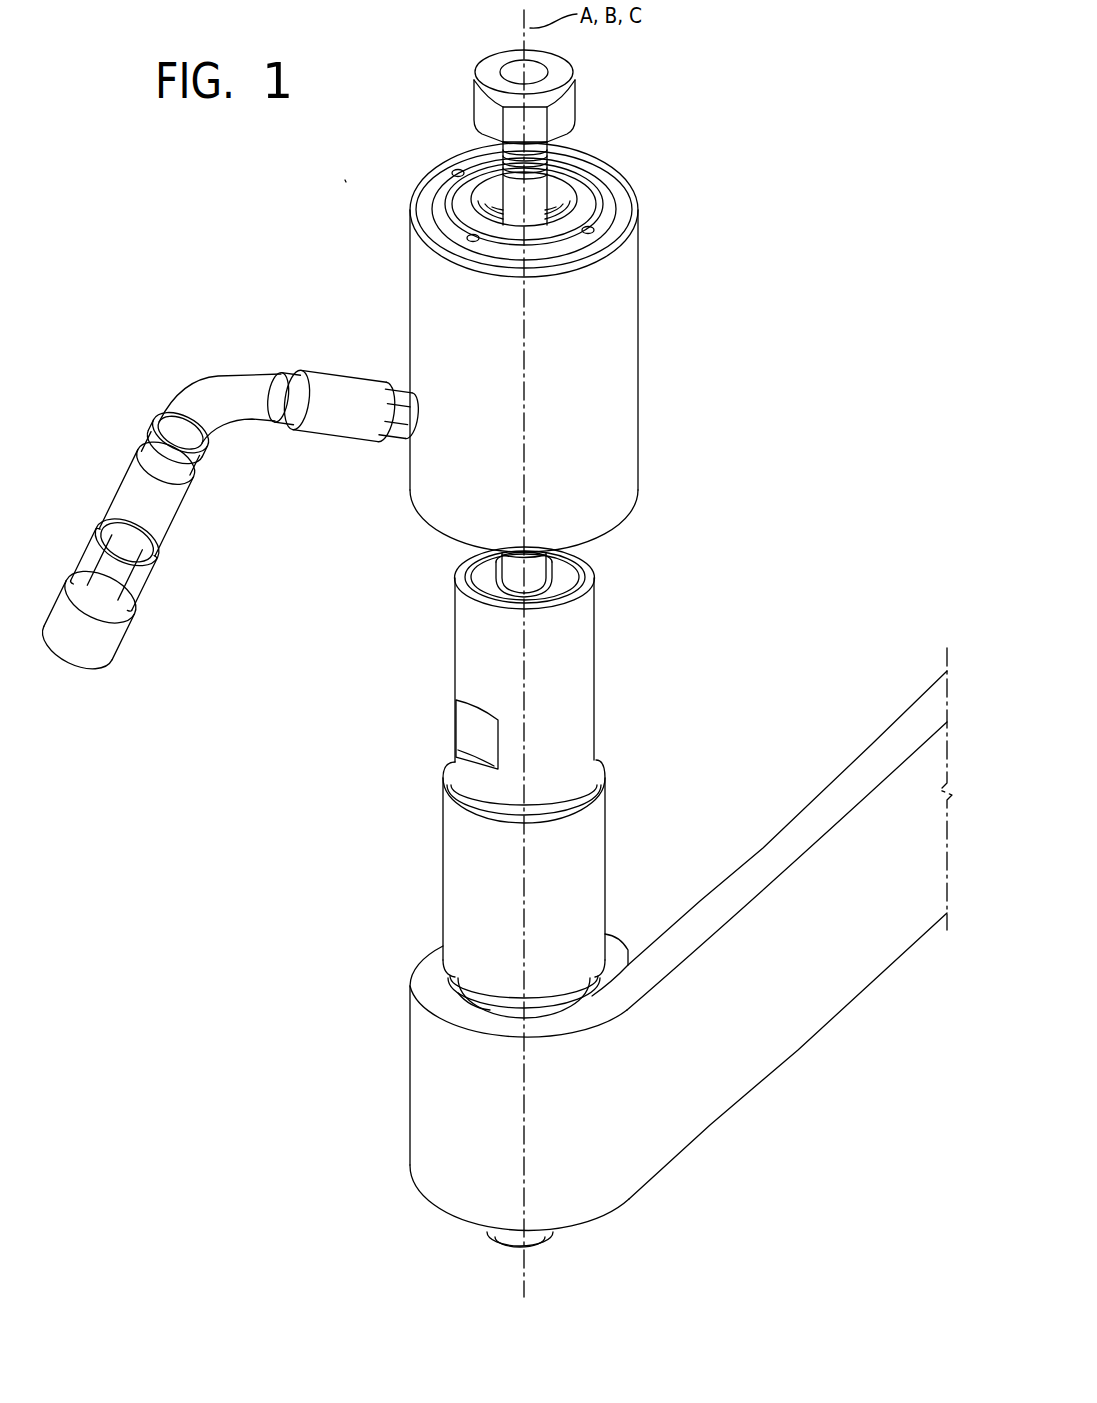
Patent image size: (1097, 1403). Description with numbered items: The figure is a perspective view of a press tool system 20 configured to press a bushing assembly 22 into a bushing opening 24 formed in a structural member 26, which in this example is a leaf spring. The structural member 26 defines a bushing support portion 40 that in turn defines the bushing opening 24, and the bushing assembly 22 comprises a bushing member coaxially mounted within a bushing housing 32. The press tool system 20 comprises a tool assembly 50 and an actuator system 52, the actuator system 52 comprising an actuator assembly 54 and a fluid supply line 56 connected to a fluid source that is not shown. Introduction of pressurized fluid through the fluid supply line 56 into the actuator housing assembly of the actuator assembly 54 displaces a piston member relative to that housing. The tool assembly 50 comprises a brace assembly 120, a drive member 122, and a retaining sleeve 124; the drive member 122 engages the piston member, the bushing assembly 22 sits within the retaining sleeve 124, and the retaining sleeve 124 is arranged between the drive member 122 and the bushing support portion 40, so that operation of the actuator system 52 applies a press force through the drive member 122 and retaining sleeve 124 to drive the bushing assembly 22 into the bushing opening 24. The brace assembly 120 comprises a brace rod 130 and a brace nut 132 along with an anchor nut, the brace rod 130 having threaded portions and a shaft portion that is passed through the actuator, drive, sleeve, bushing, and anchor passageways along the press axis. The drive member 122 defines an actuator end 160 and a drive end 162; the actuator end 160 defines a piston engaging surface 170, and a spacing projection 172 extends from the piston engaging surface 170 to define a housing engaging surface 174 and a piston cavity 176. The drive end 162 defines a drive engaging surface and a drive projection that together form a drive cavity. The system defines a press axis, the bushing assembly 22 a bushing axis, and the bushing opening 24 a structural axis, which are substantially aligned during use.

The press tool system 20 is at (345, 180).
The bushing assembly 22 is at (438, 847).
The bushing opening 24 is at (472, 990).
The structural member 26 is at (772, 1080).
The bushing housing 32 is at (580, 793).
The bushing support portion 40 is at (404, 1050).
The tool assembly 50 is at (433, 648).
The actuator system 52 is at (362, 322).
The actuator assembly 54 is at (616, 355).
The fluid supply line 56 is at (204, 390).
The brace assembly 120 is at (458, 103).
The drive member 122 is at (450, 681).
The retaining sleeve 124 is at (596, 860).
The brace rod 130 is at (537, 193).
The brace nut 132 is at (567, 105).
The actuator end 160 is at (452, 573).
The drive end 162 is at (450, 760).
The piston engaging surface 170 is at (563, 575).
The spacing projection 172 is at (590, 556).
The housing engaging surface 174 is at (582, 595).
The piston cavity 176 is at (553, 594).